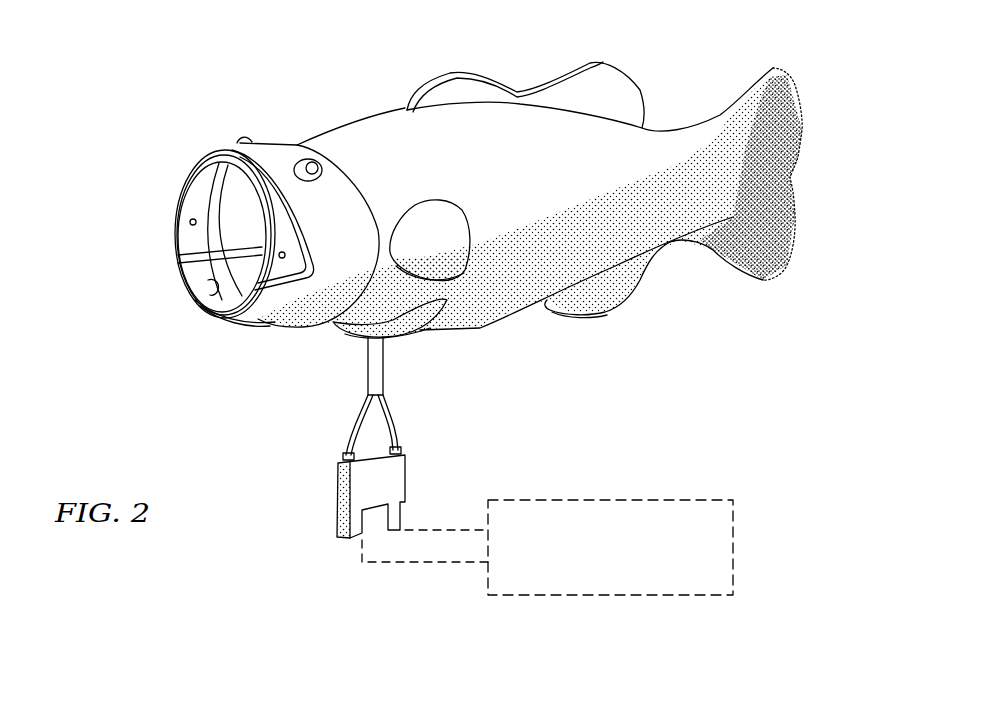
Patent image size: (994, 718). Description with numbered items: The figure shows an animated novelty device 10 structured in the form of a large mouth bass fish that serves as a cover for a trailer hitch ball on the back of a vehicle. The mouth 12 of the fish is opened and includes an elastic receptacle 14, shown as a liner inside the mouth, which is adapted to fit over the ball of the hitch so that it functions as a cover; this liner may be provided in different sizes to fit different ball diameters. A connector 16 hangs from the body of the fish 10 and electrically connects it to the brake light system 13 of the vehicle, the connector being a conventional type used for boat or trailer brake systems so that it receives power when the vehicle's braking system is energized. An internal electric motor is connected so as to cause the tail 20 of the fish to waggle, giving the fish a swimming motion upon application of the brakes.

The novelty device 10 is at (513, 320).
The mouth 12 is at (168, 248).
The elastic receptacle 14 is at (208, 283).
The connector 16 is at (407, 480).
The brake light system / brake light energizing line 13 is at (620, 500).
The tail 20 is at (763, 97).